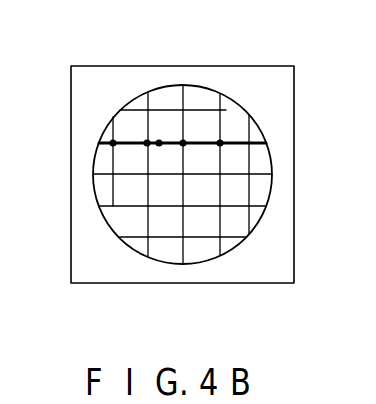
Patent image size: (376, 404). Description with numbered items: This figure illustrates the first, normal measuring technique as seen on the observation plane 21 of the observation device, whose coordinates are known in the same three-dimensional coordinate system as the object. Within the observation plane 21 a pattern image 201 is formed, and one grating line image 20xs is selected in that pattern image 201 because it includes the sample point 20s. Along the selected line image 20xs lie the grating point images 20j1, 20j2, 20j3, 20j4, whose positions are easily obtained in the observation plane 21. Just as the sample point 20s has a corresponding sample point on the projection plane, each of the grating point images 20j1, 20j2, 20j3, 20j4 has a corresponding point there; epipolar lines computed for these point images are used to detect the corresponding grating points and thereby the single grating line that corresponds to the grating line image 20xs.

The observation plane 21 is at (321, 220).
The pattern image 201 is at (285, 90).
The grating line image 20xs is at (238, 142).
The grating point image 20j1 is at (113, 143).
The grating point image 20j2 is at (147, 143).
The sample point 20s is at (159, 143).
The grating point image 20j3 is at (183, 143).
The grating point image 20j4 is at (220, 143).